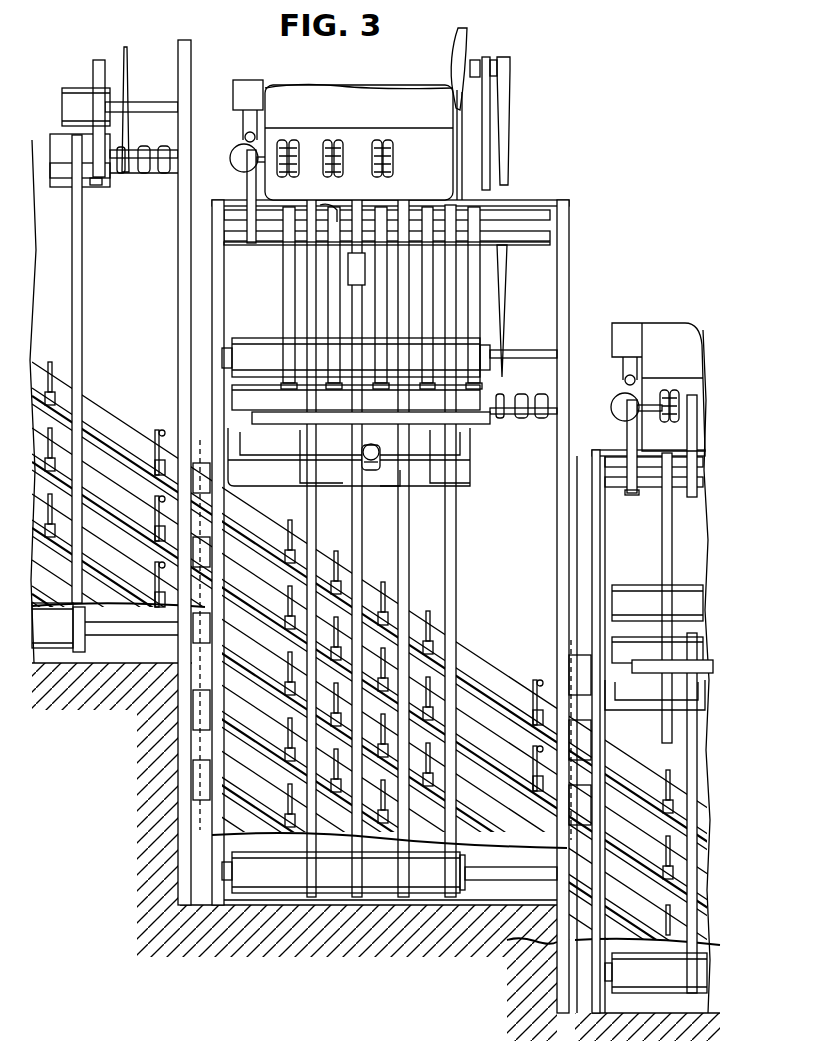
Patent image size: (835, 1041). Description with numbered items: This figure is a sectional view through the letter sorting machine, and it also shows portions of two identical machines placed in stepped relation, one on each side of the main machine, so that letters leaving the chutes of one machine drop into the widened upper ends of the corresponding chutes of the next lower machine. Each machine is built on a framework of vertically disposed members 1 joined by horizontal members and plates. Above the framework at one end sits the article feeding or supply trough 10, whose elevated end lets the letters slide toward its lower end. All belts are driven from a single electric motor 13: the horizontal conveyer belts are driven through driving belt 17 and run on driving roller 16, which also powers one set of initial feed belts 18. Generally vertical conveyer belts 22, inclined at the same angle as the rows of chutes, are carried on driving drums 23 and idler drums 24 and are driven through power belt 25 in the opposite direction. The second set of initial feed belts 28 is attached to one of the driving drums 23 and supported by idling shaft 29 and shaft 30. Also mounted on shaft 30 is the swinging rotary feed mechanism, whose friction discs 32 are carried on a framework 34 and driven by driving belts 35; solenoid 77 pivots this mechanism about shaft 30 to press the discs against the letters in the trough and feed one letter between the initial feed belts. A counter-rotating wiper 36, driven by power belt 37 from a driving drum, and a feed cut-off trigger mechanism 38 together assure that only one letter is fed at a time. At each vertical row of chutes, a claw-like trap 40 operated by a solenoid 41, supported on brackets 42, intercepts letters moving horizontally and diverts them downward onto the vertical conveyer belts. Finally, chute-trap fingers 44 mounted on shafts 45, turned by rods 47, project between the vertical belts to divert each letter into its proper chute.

The vertically disposed members 1 is at (594, 466).
The article feeding or supply trough 10 is at (648, 323).
The electric motor 13 is at (460, 40).
The driving roller 16 is at (638, 592).
The driving belt 17 is at (486, 129).
The initial feed belts 18 is at (444, 145).
The conveyer belts 22 is at (707, 758).
The driving drums 23 is at (647, 653).
The idler drums 24 is at (662, 979).
The power belt 25 is at (128, 80).
The initial feed belts 28 is at (662, 540).
The idling shaft 29 is at (645, 672).
The shaft 30 is at (688, 498).
The friction discs 32 is at (666, 390).
The framework 34 is at (630, 490).
The driving belts 35 is at (387, 148).
The counter-rotating wiper 36 is at (455, 212).
The power belt 37 is at (330, 206).
The feed cut-off trigger mechanism 38 is at (357, 286).
The claw-like trap 40 is at (385, 486).
The solenoid 41 is at (380, 446).
The brackets 42 is at (633, 712).
The fingers 44 is at (669, 770).
The shafts 45 is at (632, 915).
The rods 47 is at (540, 680).
The solenoid 77 is at (613, 410).